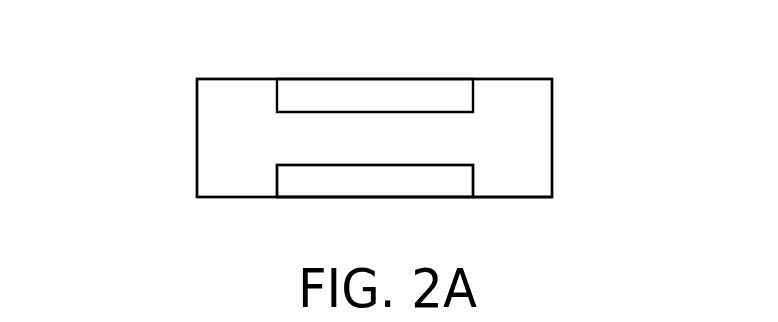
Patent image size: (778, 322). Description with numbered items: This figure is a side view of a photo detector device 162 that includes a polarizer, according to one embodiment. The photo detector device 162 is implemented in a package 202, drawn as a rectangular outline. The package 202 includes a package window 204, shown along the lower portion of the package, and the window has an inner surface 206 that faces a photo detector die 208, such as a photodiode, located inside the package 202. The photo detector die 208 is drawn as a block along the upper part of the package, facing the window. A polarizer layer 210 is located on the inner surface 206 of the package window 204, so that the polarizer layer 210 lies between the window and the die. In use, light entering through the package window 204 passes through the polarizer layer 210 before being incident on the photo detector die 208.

The photo detector device 162 is at (150, 123).
The package 202 is at (552, 158).
The package window 204 is at (480, 197).
The inner surface 206 is at (447, 195).
The photo detector die 208 is at (435, 88).
The polarizer layer 210 is at (318, 180).